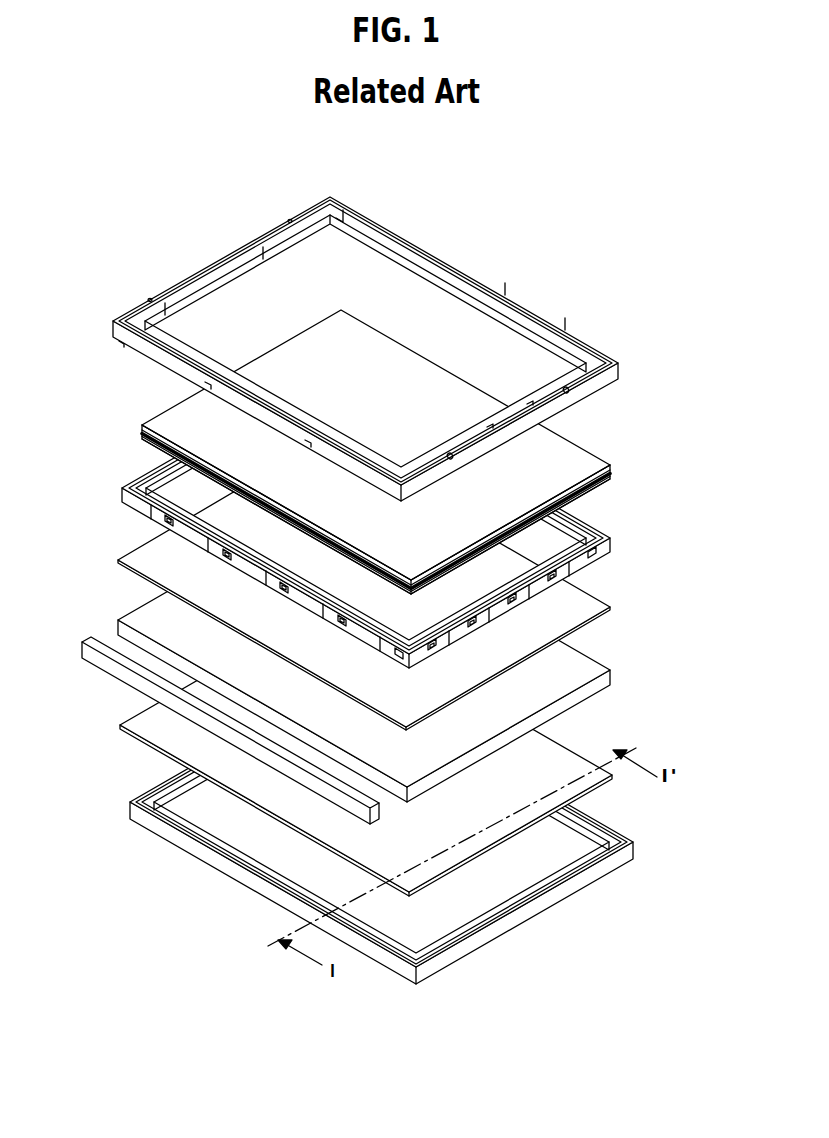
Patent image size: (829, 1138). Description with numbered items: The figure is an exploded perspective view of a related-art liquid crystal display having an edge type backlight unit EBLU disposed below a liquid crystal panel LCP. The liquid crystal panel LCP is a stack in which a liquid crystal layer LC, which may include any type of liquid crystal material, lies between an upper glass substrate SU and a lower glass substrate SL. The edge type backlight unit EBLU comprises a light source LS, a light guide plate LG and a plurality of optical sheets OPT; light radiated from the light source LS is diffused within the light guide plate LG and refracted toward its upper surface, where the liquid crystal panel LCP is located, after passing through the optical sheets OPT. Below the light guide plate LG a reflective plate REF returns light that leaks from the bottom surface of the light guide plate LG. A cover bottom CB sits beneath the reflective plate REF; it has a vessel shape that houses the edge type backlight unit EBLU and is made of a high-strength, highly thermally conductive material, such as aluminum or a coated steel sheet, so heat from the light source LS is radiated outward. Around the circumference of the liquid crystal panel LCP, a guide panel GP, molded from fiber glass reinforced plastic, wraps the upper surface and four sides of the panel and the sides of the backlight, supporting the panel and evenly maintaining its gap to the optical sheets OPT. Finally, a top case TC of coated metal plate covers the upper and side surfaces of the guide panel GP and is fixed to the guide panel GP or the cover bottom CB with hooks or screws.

The top case TC is at (600, 352).
The liquid crystal panel LCP is at (428, 452).
The upper glass substrate SU is at (600, 457).
The liquid crystal layer LC is at (612, 470).
The lower glass substrate SL is at (612, 480).
The guide panel GP is at (600, 528).
The optical sheets OPT is at (605, 607).
The light guide plate LG is at (605, 667).
The light source LS is at (85, 640).
The reflective plate REF is at (552, 758).
The cover bottom CB is at (545, 897).
The edge type backlight unit EBLU is at (687, 592).